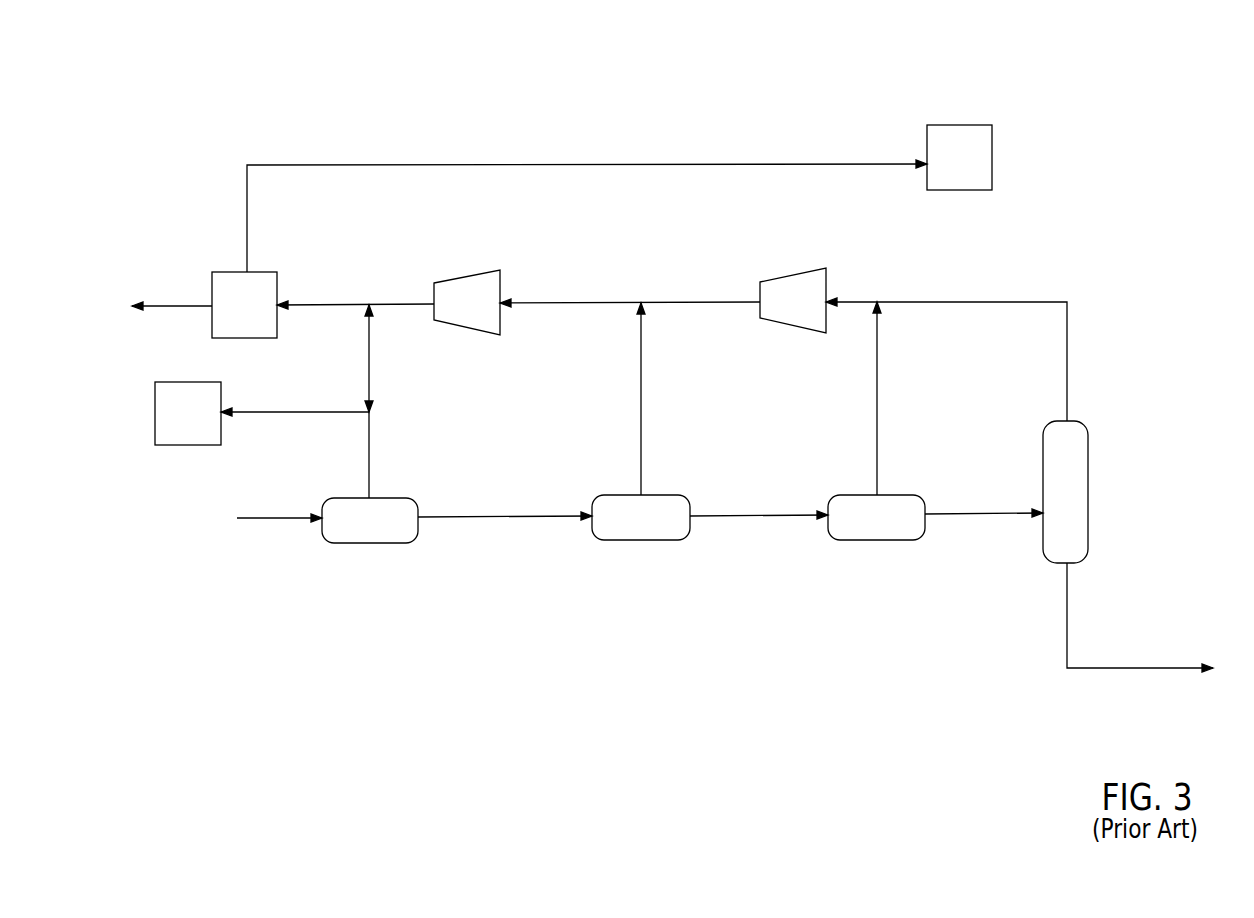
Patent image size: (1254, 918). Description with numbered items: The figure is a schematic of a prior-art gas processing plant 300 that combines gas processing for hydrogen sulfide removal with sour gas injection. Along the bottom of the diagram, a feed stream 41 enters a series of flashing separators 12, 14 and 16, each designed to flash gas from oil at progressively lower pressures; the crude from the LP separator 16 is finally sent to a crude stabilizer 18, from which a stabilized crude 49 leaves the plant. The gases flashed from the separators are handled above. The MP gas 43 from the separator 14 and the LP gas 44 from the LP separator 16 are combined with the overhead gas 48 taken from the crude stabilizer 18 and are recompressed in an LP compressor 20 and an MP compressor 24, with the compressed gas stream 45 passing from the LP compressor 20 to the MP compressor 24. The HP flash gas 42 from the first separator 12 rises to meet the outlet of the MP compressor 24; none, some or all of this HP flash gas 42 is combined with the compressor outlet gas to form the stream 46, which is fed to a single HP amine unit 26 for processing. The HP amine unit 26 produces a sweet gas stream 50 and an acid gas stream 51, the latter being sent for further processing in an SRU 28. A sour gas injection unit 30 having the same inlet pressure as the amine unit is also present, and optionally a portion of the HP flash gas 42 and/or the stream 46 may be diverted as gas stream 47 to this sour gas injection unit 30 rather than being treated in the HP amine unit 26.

The gas processing plant 300 is at (446, 66).
The flashing separator 12 is at (359, 532).
The flashing separator 14 is at (630, 529).
The LP separator 16 is at (865, 529).
The crude stabilizer 18 is at (1054, 504).
The LP compressor 20 is at (782, 313).
The MP compressor 24 is at (456, 314).
The HP amine unit 26 is at (234, 317).
The SRU 28 is at (949, 169).
The sour gas injection unit 30 is at (177, 425).
The feed stream 41 is at (266, 518).
The HP flash gas 42 is at (371, 434).
The MP gas 43 is at (641, 423).
The LP gas 44 is at (877, 423).
The stream 45 is at (597, 302).
The combined gas stream 46 is at (347, 304).
The gas stream to sour gas injection 47 is at (304, 412).
The overhead gas 48 is at (1067, 350).
The product stream 49 is at (1152, 621).
The sweet gas stream 50 is at (158, 306).
The acid gas stream 51 is at (305, 165).